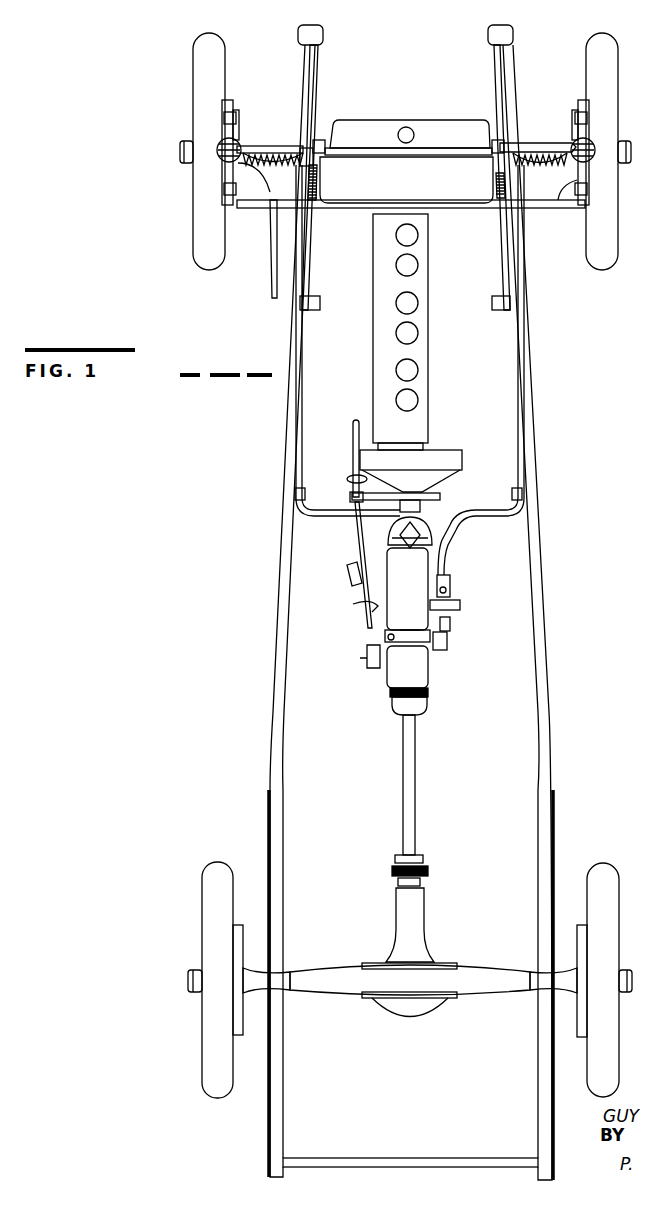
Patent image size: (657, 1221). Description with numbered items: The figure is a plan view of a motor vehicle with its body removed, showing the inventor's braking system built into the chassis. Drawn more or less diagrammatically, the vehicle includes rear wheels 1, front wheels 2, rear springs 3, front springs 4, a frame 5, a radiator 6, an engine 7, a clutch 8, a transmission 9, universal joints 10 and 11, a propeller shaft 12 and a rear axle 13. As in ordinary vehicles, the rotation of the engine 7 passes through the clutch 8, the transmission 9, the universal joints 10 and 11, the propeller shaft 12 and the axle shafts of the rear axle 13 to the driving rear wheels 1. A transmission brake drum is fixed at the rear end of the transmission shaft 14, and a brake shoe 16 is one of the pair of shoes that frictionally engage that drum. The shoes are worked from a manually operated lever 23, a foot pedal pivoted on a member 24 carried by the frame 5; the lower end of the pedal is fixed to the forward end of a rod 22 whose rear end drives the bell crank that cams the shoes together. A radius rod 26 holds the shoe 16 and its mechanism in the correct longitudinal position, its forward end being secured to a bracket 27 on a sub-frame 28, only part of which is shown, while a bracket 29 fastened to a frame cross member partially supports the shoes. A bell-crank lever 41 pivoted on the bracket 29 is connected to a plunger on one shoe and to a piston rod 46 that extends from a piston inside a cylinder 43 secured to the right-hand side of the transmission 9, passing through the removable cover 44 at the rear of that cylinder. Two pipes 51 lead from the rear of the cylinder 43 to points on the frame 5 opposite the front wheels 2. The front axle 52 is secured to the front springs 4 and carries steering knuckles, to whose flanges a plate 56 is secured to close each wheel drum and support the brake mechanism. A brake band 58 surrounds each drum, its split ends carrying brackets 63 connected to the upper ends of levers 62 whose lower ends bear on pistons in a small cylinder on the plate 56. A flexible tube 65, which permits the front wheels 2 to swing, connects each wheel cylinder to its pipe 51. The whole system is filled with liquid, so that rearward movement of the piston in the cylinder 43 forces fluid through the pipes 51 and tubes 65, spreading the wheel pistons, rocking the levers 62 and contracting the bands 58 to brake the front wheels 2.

The rear wheels 1 is at (200, 1058).
The front wheels 2 is at (194, 52).
The rear springs 3 is at (283, 1115).
The front springs 4 is at (319, 96).
The frame 5 is at (271, 772).
The radiator 6 is at (384, 125).
The engine 7 is at (373, 330).
The clutch 8 is at (447, 452).
The transmission 9 is at (407, 595).
The universal joint 10 is at (426, 703).
The universal joint 11 is at (426, 870).
The propeller shaft 12 is at (417, 797).
The rear axle 13 is at (340, 976).
The transmission shaft 14 is at (392, 693).
The brake shoe 16 is at (383, 668).
The rod 22 is at (358, 539).
The manually operated lever 23 is at (348, 477).
The member 24 is at (437, 498).
The radius rod 26 is at (367, 652).
The bracket 27 is at (354, 604).
The sub-frame 28 is at (348, 574).
The bracket 29 is at (405, 629).
The bell-crank lever 41 is at (447, 641).
The cylinder 43 is at (452, 583).
The cover 44 is at (460, 606).
The piston rod 46 is at (451, 623).
The pipes 51 is at (319, 511).
The front axle 52 is at (528, 146).
The plate 56 is at (233, 120).
The brake band 58 is at (229, 102).
The levers 62 is at (217, 135).
The brackets 63 is at (224, 118).
The flexible tube 65 is at (260, 150).